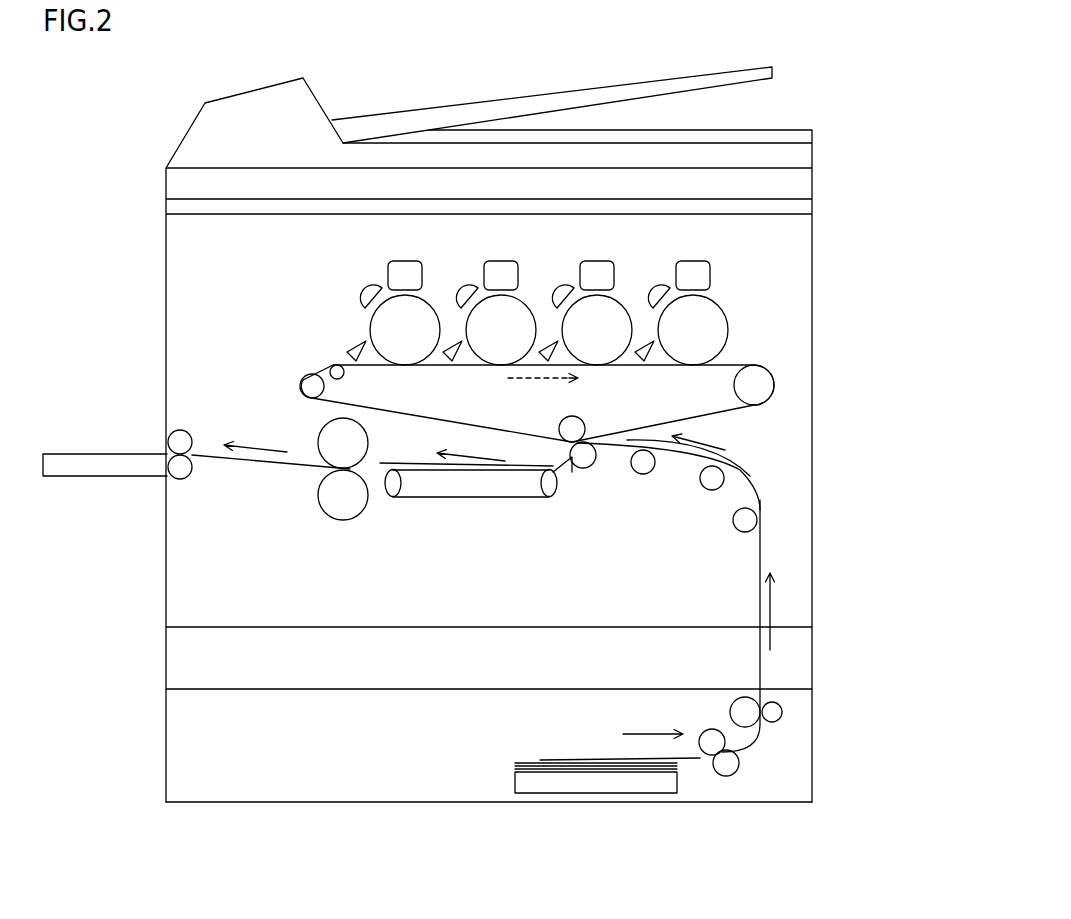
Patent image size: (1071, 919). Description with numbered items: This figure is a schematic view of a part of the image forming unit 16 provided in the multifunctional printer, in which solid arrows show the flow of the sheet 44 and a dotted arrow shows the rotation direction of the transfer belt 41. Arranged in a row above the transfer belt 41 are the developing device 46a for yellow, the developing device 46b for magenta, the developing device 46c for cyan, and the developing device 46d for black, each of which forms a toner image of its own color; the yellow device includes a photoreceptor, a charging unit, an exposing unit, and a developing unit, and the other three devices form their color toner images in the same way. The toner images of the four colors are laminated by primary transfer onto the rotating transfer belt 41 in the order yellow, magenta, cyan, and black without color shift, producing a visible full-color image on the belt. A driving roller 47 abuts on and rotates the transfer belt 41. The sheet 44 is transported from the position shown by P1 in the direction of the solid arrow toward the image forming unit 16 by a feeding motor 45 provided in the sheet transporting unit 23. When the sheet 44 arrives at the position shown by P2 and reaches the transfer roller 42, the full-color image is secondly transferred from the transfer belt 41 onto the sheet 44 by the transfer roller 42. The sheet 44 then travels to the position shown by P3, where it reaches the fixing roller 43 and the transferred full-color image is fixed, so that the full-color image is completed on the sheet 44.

The image forming unit 16 is at (838, 294).
The sheet transporting unit 23 is at (840, 711).
The transfer belt 41 is at (509, 373).
The transfer roller 42 is at (581, 468).
The fixing roller 43 is at (343, 521).
The sheet 44 is at (515, 781).
The feeding motor 45 is at (756, 771).
The developing device for yellow 46a is at (440, 250).
The developing device for magenta 46b is at (536, 250).
The developing device for cyan 46c is at (632, 250).
The developing device for black 46d is at (728, 250).
The driving roller 47 is at (300, 387).
The sheet start position P1 is at (566, 758).
The sheet transfer position P2 is at (740, 466).
The sheet fixing position P3 is at (393, 463).